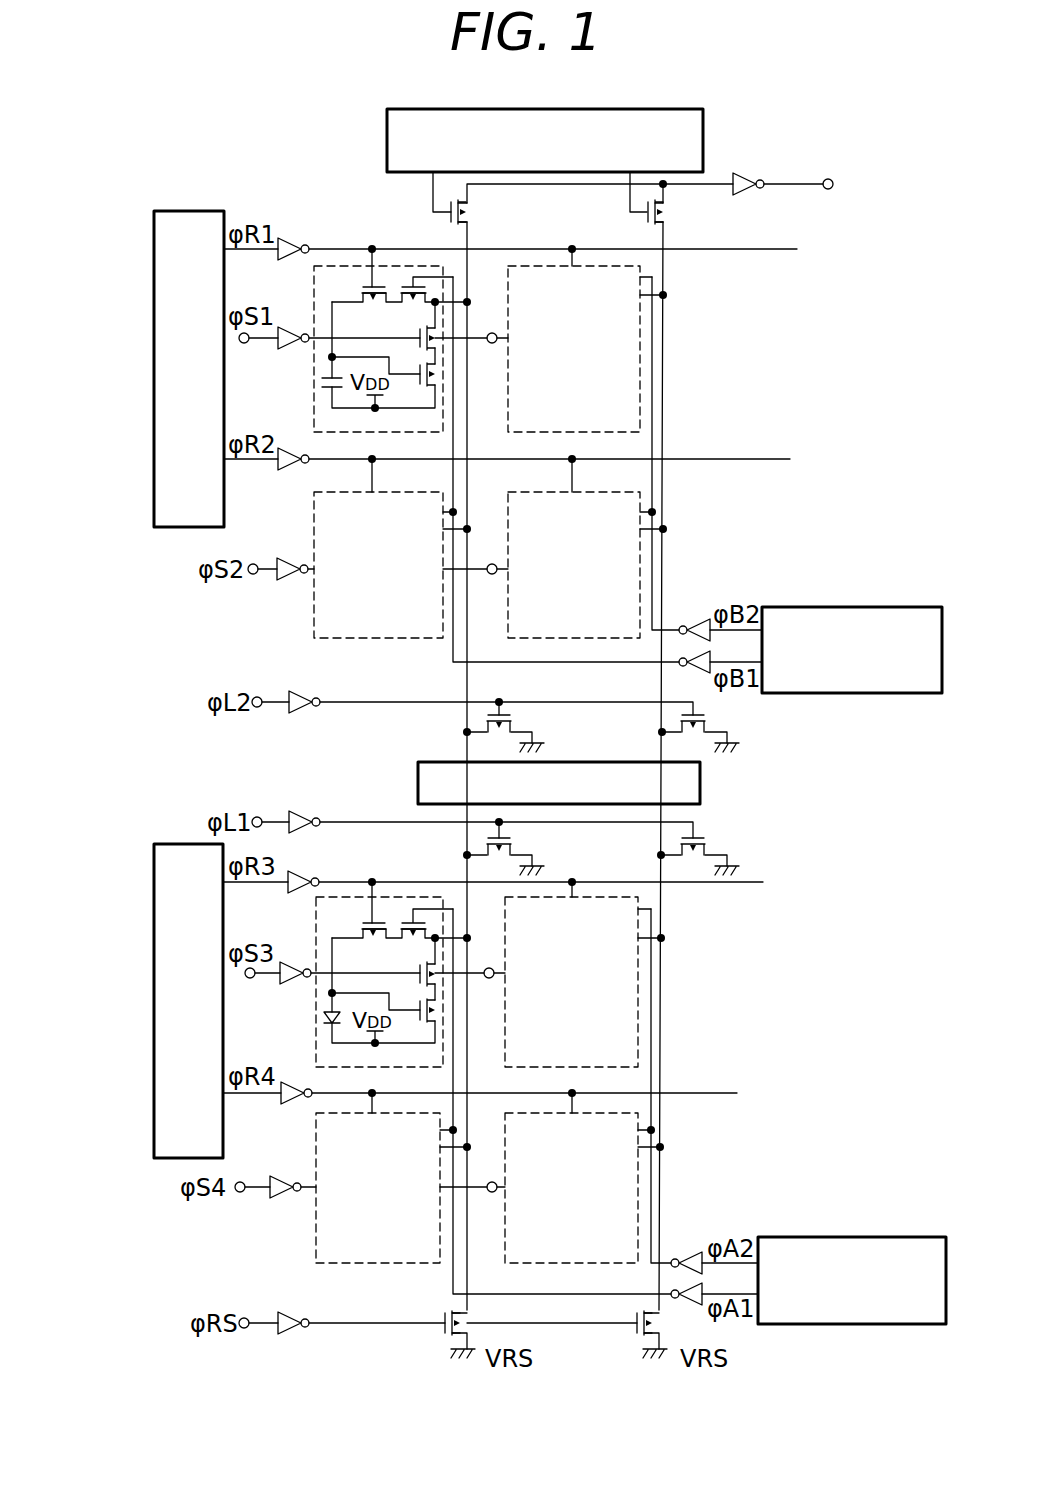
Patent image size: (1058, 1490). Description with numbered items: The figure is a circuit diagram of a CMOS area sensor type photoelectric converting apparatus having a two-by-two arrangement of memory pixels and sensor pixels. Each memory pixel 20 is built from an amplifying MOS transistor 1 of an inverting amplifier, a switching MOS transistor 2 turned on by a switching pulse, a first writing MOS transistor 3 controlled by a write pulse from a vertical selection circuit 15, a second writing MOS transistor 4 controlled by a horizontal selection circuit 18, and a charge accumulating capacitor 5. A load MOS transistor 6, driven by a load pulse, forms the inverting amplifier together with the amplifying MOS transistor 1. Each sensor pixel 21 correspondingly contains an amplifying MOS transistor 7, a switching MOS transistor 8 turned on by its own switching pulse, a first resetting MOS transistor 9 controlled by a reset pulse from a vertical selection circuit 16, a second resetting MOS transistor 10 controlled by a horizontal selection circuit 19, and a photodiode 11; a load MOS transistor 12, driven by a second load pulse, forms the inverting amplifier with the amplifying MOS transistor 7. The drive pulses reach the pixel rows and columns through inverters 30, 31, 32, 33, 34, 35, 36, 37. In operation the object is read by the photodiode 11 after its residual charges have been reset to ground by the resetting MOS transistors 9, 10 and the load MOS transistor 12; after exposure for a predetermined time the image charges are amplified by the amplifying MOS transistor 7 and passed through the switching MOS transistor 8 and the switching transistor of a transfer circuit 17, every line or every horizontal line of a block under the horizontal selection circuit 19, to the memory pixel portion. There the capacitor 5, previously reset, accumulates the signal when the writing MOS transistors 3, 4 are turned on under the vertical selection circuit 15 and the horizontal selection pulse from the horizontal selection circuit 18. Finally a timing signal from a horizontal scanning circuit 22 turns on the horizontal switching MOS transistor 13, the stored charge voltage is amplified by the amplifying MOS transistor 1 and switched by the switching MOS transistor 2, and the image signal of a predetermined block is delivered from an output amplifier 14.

The amplifying MOS transistor 1 is at (419, 370).
The switching MOS transistor 2 is at (420, 325).
The first writing MOS transistor 3 is at (362, 290).
The second writing MOS transistor 4 is at (393, 285).
The capacitor 5 is at (341, 392).
The load MOS transistor 6 is at (512, 720).
The amplifying MOS transistor 7 is at (418, 1000).
The switching MOS transistor 8 is at (420, 966).
The first resetting MOS transistor 9 is at (360, 924).
The second resetting MOS transistor 10 is at (404, 908).
The photodiode 11 is at (340, 1030).
The load MOS transistor 12 is at (512, 843).
The horizontal switching MOS transistor 13 is at (468, 212).
The output amplifier 14 is at (748, 196).
The vertical selection circuit 15 is at (153, 505).
The vertical selection circuit 16 is at (224, 1125).
The transfer circuit 17 is at (418, 772).
The horizontal selection circuit 18 is at (908, 607).
The horizontal selection circuit 19 is at (898, 1237).
The memory pixel 20 is at (312, 400).
The sensor pixel 21 is at (316, 915).
The horizontal scanning circuit 22 is at (703, 124).
The inverter 30 is at (285, 238).
The inverter 31 is at (287, 350).
The inverter 32 is at (296, 713).
The inverter 33 is at (680, 626).
The inverter 34 is at (300, 871).
The inverter 35 is at (290, 985).
The inverter 36 is at (675, 1259).
The inverter 37 is at (282, 1312).